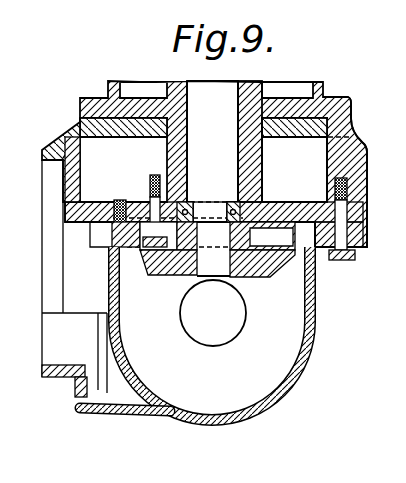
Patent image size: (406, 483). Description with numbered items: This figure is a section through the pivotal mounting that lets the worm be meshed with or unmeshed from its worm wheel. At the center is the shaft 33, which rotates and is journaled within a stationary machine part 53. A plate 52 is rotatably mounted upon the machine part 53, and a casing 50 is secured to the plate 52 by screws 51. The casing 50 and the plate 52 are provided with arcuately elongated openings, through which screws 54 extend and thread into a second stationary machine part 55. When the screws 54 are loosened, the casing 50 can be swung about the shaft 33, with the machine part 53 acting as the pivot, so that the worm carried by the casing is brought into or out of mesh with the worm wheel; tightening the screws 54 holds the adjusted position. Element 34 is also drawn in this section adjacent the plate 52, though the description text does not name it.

The shaft 33 is at (223, 140).
The block 34 is at (268, 279).
The casing 50 is at (312, 323).
The screws 51 is at (363, 237).
The plate 52 is at (357, 208).
The stationary machine part 53 is at (253, 190).
The screws 54 is at (343, 253).
The stationary machine part 55 is at (358, 153).